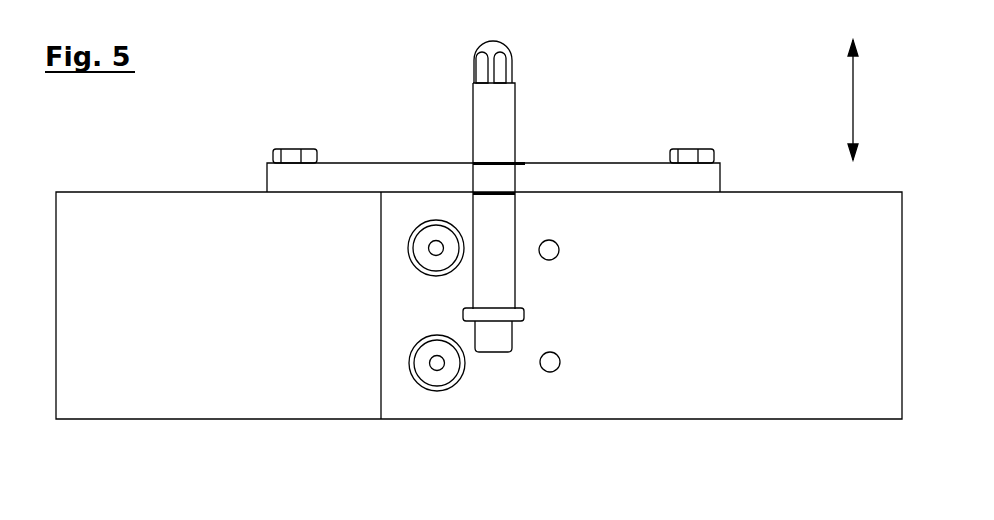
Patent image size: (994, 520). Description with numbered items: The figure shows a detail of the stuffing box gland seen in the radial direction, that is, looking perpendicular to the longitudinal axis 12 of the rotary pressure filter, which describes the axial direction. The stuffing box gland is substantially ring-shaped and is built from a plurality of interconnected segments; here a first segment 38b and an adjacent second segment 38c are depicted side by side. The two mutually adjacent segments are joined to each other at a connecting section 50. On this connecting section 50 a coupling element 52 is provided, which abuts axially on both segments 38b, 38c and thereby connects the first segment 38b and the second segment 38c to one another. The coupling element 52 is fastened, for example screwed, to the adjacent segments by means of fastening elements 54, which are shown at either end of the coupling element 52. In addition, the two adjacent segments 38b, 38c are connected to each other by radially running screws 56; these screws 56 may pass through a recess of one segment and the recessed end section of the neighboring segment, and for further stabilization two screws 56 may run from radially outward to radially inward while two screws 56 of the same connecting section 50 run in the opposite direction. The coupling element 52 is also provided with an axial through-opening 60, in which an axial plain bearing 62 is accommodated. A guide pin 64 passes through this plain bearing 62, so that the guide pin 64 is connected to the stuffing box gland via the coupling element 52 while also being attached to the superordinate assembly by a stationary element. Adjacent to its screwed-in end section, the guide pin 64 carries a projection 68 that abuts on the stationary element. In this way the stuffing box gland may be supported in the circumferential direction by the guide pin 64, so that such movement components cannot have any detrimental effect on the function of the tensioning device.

The longitudinal axis 12 is at (873, 100).
The first segment 38b is at (239, 358).
The second segment 38c is at (752, 358).
The connecting section 50 is at (479, 262).
The coupling element 52 is at (571, 167).
The fastening element 54 is at (292, 155).
The radially running screw 56 is at (543, 368).
The axial through-opening 60 is at (470, 162).
The axial plain bearing 62 is at (468, 210).
The guide pin 64 is at (456, 80).
The projection 68 is at (518, 313).